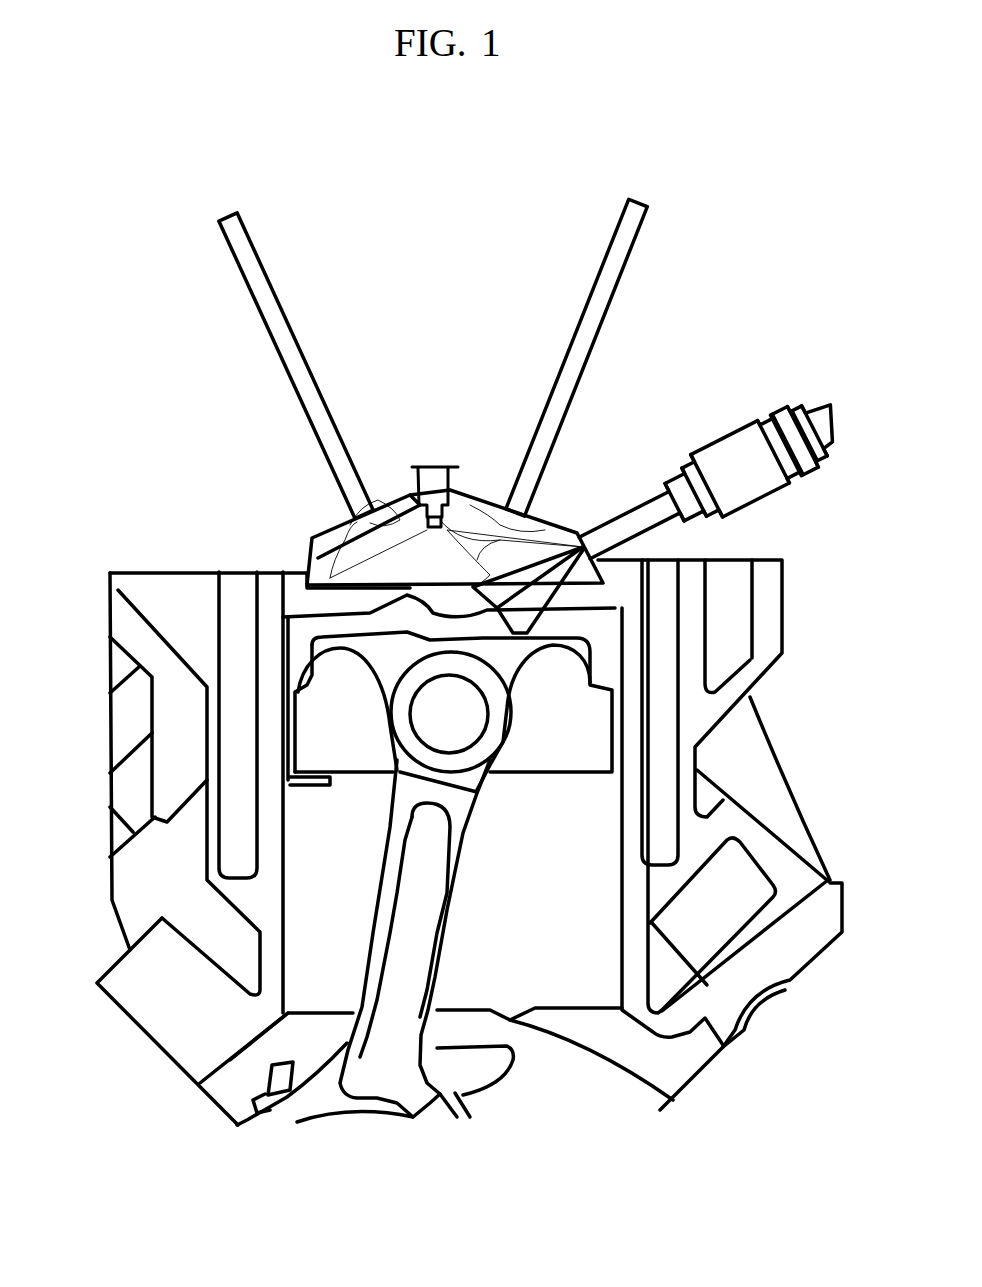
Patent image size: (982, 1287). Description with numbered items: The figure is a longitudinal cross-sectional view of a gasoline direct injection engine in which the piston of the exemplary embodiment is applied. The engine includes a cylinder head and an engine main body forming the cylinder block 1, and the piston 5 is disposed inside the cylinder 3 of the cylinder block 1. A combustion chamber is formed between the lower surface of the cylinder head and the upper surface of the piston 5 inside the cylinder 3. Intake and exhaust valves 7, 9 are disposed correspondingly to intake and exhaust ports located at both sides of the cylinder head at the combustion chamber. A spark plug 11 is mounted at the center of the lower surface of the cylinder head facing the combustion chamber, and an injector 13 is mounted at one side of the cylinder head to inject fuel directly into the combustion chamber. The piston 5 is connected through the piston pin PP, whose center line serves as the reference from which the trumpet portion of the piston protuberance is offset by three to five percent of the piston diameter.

The cylinder block 1 is at (630, 715).
The cylinder 3 is at (578, 869).
The piston 5 is at (600, 645).
The intake valve 7 is at (572, 375).
The exhaust valve 9 is at (305, 408).
The spark plug 11 is at (430, 463).
The injector 13 is at (743, 437).
The piston pin PP is at (443, 710).